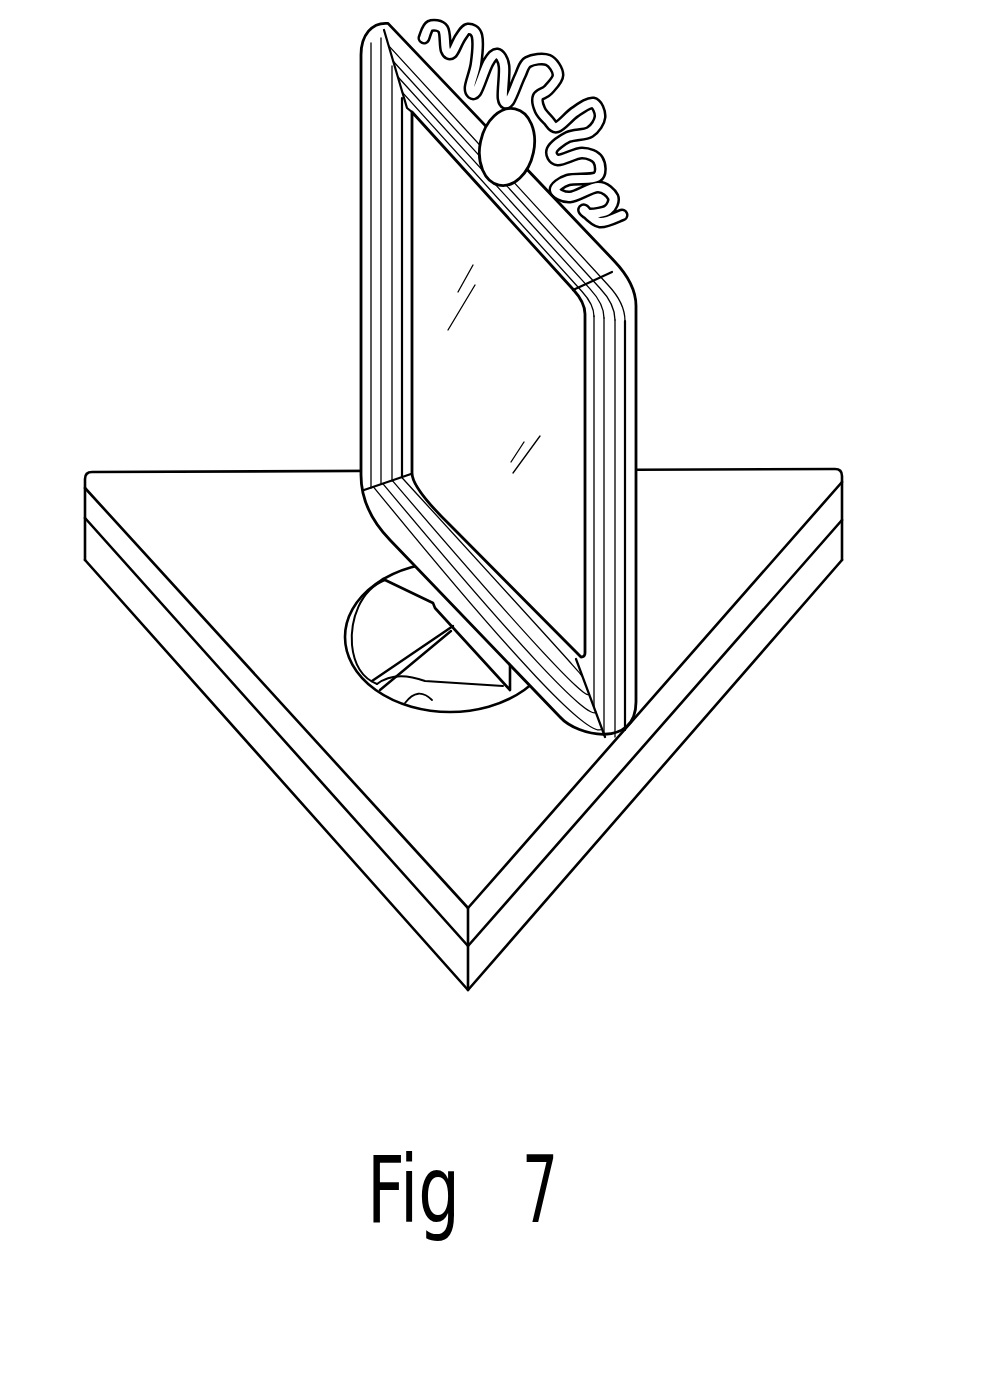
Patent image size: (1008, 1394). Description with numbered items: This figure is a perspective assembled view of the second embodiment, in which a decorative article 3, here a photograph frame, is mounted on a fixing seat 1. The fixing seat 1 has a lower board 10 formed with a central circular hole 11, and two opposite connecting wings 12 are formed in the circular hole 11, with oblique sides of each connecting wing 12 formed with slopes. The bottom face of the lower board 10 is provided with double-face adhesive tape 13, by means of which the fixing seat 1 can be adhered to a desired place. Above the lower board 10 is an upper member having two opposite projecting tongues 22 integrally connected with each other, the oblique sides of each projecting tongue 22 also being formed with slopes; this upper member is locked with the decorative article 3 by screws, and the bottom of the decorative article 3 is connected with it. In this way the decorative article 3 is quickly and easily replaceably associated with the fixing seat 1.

The fixing seat 1 is at (466, 510).
The decorative article 3 is at (367, 200).
The lower board 10 is at (225, 612).
The central circular hole 11 is at (431, 702).
The connecting wing 12 is at (390, 630).
The double-face adhesive tape 13 is at (287, 780).
The projecting tongue 22 is at (468, 673).